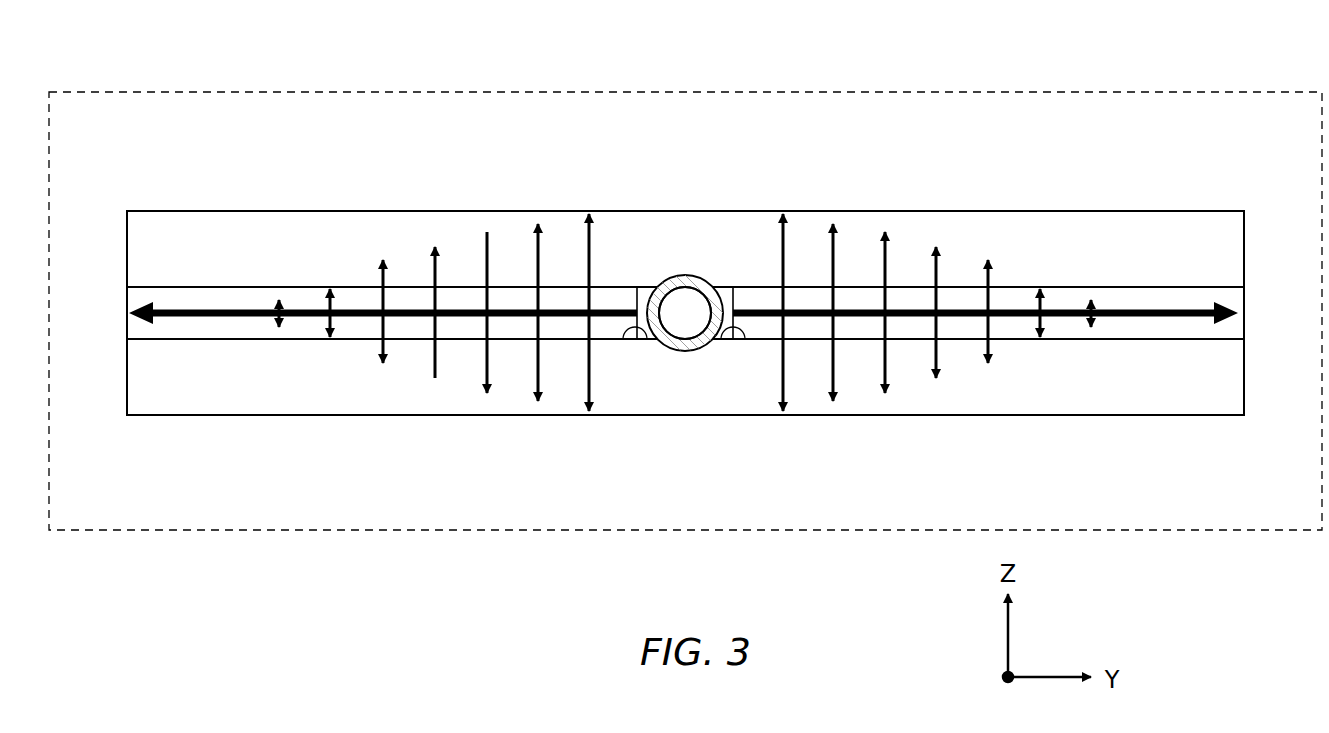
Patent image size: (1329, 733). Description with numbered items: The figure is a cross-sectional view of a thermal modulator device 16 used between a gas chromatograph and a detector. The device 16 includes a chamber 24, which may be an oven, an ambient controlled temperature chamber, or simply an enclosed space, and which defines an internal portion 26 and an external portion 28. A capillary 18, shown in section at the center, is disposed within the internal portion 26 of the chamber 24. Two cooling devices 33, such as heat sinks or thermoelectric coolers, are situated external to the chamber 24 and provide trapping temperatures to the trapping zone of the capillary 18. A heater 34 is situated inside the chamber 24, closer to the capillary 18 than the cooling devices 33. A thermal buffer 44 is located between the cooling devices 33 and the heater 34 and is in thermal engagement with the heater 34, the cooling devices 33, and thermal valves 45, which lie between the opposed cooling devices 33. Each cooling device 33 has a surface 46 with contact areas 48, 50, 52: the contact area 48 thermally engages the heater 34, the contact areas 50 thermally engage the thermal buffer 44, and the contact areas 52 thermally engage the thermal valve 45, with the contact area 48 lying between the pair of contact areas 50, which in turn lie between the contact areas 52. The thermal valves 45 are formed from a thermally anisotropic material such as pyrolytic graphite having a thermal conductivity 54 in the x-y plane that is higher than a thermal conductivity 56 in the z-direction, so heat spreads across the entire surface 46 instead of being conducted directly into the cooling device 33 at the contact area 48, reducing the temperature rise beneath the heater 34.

The device 16 is at (175, 178).
The capillary 18 is at (698, 285).
The chamber 24 is at (228, 85).
The internal portion 26 is at (331, 160).
The external portion 28 is at (675, 38).
The cooling device 33 is at (1120, 235).
The heater 34 is at (695, 303).
The thermal buffer 44 is at (643, 285).
The thermal valve 45 is at (249, 330).
The surface 46 is at (165, 287).
The contact area 48 is at (690, 328).
The contact area 50 is at (635, 330).
The contact area 52 is at (462, 330).
The thermal conductivity 54 is at (383, 345).
The thermal conductivity 56 is at (481, 272).